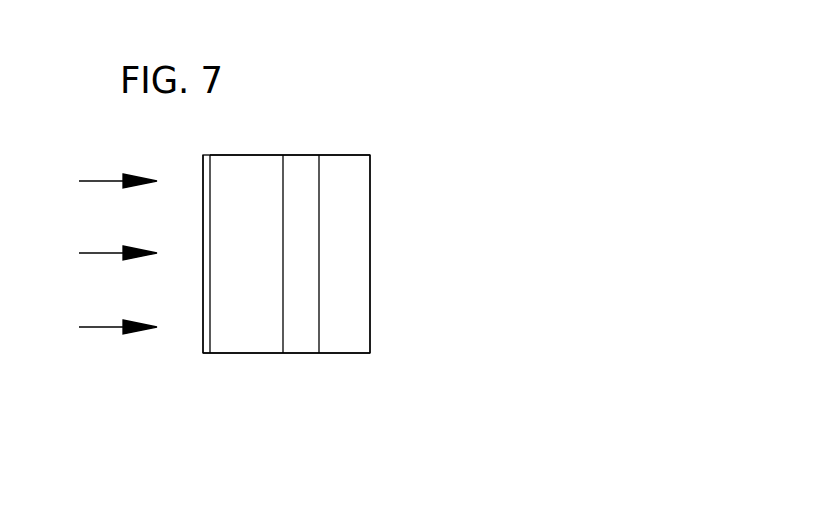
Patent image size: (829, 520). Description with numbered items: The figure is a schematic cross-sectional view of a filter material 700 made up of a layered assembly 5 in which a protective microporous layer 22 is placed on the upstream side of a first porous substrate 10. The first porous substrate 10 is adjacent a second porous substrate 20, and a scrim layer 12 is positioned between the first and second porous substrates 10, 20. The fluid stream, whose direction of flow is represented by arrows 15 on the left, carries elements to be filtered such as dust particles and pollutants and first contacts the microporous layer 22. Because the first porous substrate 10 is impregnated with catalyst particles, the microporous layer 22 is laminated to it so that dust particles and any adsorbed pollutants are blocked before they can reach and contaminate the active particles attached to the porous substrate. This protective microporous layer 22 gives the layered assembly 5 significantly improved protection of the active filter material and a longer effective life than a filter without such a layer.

The multilayer article 700 is at (403, 80).
The layered assembly 5 is at (370, 369).
The first porous substrate 10 is at (252, 155).
The scrim layer 12 is at (300, 165).
The second porous substrate 20 is at (358, 176).
The microporous layer 22 is at (203, 190).
The arrows 15 is at (90, 181).